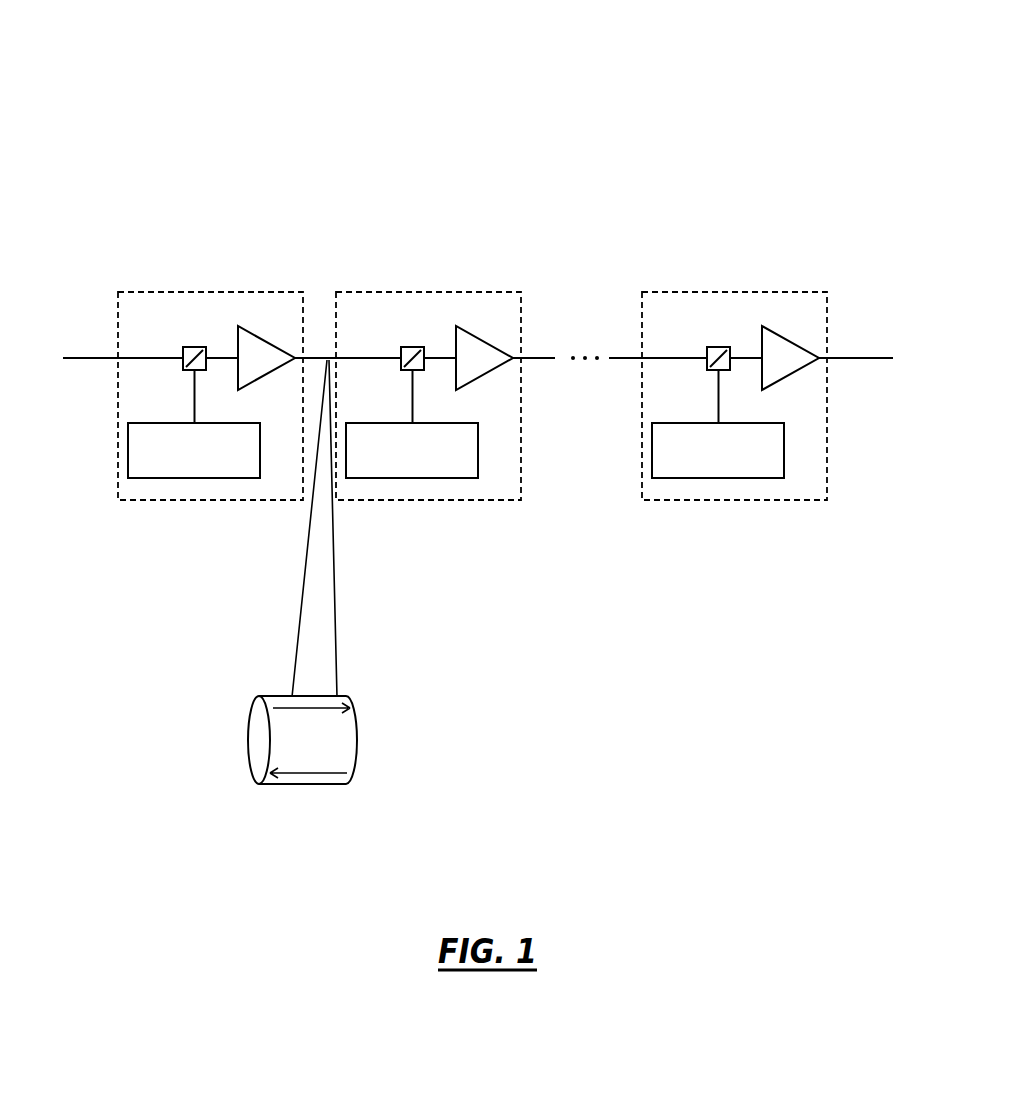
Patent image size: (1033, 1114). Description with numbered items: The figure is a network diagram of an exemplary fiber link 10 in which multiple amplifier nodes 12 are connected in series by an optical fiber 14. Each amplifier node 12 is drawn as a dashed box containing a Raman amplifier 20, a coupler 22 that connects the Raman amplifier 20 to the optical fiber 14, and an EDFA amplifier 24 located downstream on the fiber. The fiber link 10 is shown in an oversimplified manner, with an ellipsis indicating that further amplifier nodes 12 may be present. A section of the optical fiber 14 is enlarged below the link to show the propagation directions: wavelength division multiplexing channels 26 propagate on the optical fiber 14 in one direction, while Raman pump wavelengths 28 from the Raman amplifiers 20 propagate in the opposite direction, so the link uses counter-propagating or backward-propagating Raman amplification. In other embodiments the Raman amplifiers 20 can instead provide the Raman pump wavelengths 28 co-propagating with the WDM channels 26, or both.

The fiber link 10 is at (499, 131).
The amplifier node 12 is at (237, 292).
The optical fiber 14 is at (862, 358).
The Raman amplifier 20 is at (183, 478).
The coupler 22 is at (195, 347).
The EDFA amplifier 24 is at (268, 347).
The WDM channels 26 is at (338, 703).
The Raman pump wavelengths 28 is at (302, 773).